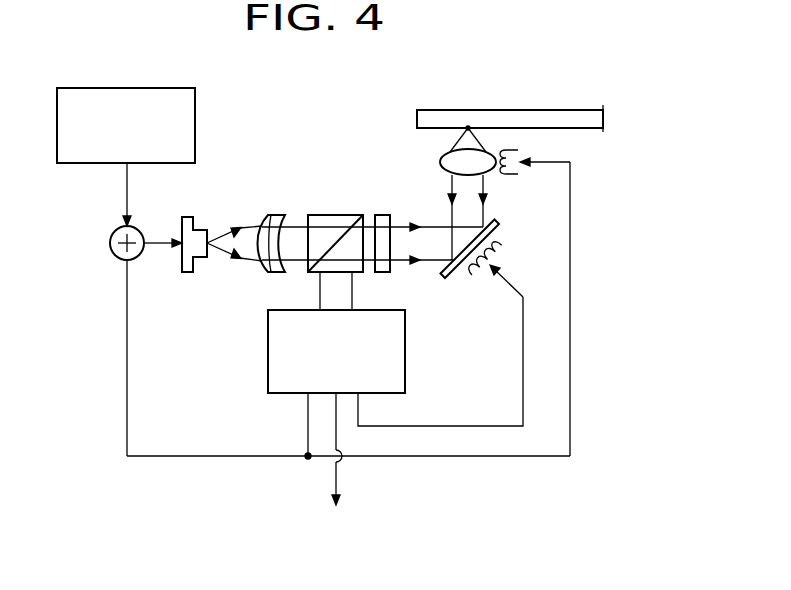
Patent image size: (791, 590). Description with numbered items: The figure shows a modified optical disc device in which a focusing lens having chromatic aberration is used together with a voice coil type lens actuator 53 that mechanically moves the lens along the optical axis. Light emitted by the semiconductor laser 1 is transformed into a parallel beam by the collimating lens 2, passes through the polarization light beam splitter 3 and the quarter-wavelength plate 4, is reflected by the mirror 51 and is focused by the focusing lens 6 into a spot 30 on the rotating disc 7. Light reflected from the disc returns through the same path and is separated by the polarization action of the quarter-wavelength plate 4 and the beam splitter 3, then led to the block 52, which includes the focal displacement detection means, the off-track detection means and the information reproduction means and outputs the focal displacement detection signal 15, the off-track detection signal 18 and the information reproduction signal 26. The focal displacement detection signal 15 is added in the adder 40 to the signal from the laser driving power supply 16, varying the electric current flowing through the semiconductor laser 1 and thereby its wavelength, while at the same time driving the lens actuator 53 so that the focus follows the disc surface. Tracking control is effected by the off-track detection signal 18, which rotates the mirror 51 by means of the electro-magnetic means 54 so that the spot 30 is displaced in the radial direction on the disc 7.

The semiconductor laser 1 is at (193, 215).
The collimating lens 2 is at (263, 213).
The polarization light beam splitter 3 is at (340, 213).
The quarter-wavelength plate 4 is at (390, 213).
The focusing lens 6 is at (443, 157).
The disc 7 is at (557, 110).
The focal displacement detection signal 15 is at (308, 420).
The laser driving power supply 16 is at (128, 88).
The off-track detection signal 18 is at (360, 402).
The information reproduction signal 26 is at (338, 478).
The spot 30 is at (468, 128).
The adder 40 is at (113, 257).
The mirror 51 is at (450, 278).
The focal displacement detection means 52 is at (268, 340).
The lens actuator 53 is at (519, 153).
The electro-magnetic means 54 is at (498, 246).